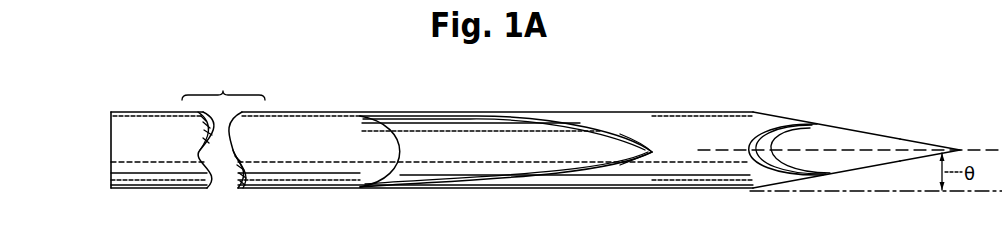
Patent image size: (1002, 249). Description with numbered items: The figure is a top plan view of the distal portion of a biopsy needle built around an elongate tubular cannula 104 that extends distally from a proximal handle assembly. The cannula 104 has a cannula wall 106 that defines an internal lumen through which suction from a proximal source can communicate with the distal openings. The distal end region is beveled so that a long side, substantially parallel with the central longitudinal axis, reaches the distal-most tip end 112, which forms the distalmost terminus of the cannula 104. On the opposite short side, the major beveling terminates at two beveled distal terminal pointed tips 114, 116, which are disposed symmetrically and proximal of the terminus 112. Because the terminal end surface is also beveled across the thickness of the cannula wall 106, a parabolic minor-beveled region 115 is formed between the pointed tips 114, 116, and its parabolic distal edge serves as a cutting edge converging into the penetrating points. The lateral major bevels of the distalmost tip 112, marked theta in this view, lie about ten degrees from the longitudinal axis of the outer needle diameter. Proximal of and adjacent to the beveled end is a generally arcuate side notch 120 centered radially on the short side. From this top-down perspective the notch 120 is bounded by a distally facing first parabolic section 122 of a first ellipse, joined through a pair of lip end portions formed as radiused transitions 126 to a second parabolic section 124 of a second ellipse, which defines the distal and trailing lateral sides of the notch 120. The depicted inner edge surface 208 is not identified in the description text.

The cannula 104 is at (282, 200).
The cannula wall 106 is at (443, 117).
The distal-most tip end 112 is at (961, 148).
The beveled distal terminal pointed tip 114 is at (832, 125).
The parabolic minor-beveled region 115 is at (768, 140).
The beveled distal terminal pointed tip 116 is at (833, 173).
The side notch 120 is at (536, 137).
The first parabolic section 122 is at (397, 150).
The second parabolic section 124 is at (633, 140).
The radiused transition 126 is at (357, 190).
The inner lumen wall 208 is at (492, 147).